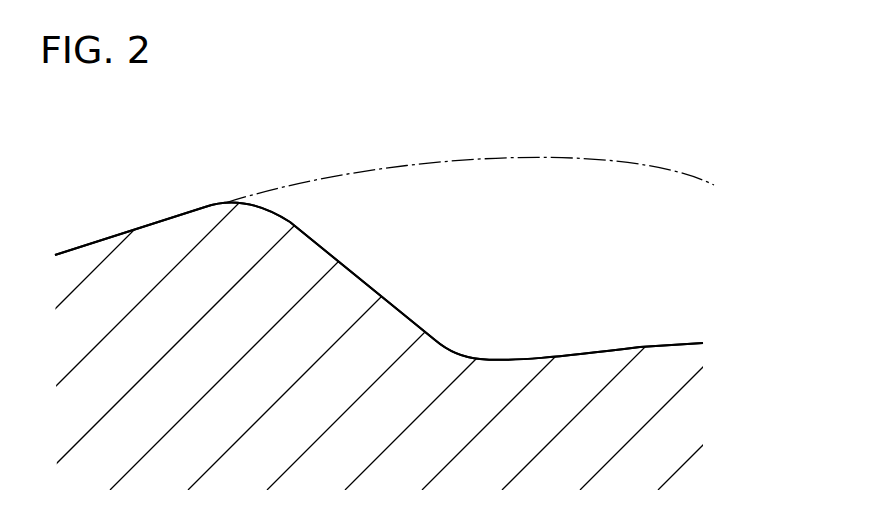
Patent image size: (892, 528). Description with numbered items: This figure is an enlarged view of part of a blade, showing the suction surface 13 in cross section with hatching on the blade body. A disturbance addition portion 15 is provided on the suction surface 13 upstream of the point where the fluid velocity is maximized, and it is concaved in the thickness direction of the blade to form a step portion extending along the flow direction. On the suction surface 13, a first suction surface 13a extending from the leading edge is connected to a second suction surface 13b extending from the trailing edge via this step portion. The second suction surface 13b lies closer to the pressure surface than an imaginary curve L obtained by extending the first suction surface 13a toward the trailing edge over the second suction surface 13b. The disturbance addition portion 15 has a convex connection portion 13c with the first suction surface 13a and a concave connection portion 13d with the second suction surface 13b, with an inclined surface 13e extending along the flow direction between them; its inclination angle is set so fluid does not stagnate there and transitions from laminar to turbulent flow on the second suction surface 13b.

The suction surface 13 is at (821, 213).
The first suction surface 13a is at (112, 233).
The second suction surface 13b is at (697, 343).
The connection portion 13c is at (267, 204).
The connection portion 13d is at (480, 358).
The inclined surface 13e is at (385, 293).
The disturbance addition portion 15 is at (478, 218).
The imaginary curve L is at (396, 165).